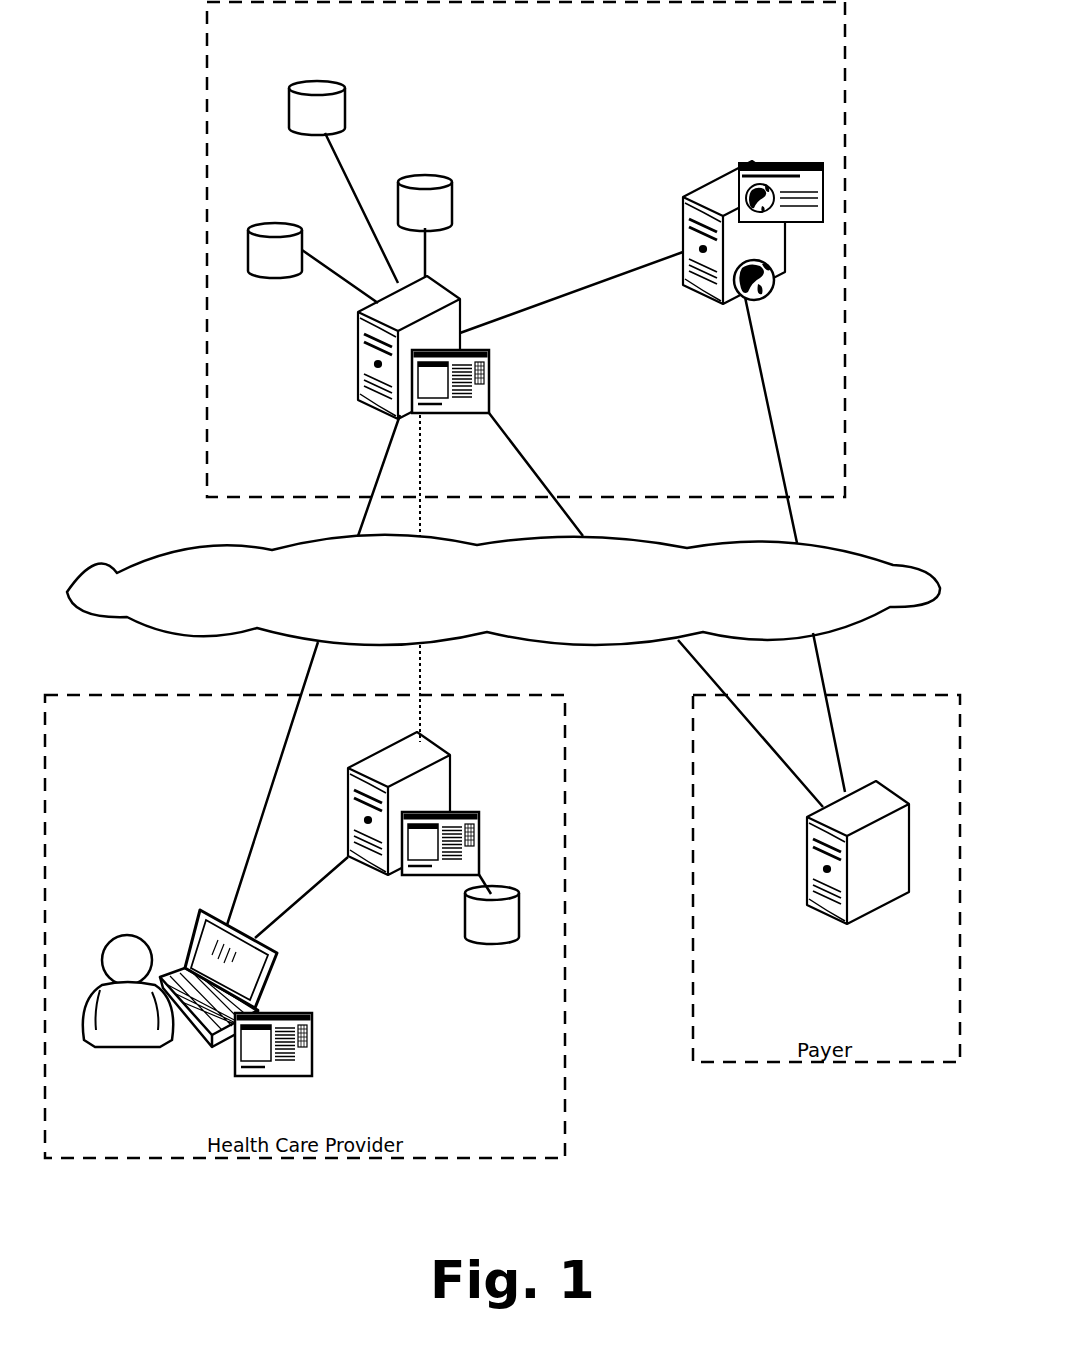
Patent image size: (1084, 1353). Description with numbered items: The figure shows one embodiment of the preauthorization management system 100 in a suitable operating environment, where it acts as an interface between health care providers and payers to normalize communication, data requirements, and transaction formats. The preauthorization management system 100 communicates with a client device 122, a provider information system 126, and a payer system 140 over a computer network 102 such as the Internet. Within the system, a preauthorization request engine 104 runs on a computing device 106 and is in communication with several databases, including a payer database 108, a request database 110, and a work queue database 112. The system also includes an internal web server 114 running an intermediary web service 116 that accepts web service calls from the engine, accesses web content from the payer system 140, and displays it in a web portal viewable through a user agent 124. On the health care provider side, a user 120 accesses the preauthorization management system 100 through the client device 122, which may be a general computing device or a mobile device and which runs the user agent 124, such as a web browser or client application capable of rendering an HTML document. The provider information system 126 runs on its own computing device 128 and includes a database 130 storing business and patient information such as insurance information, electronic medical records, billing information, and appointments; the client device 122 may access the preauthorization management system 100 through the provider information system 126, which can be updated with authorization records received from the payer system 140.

The preauthorization management system 100 is at (842, 491).
The computer network 102 is at (142, 547).
The preauthorization request engine 104 is at (489, 358).
The computing device 106 is at (358, 372).
The payer database 108 is at (273, 222).
The request database 110 is at (317, 80).
The work queue database 112 is at (428, 174).
The internal web server 114 is at (782, 163).
The intermediary web service 116 is at (683, 232).
The user 120 is at (138, 1050).
The client device 122 is at (200, 918).
The user agent 124 is at (313, 1043).
The provider information system 126 is at (478, 838).
The computing device 128 is at (450, 772).
The database 130 is at (467, 915).
The payer system 140 is at (807, 870).